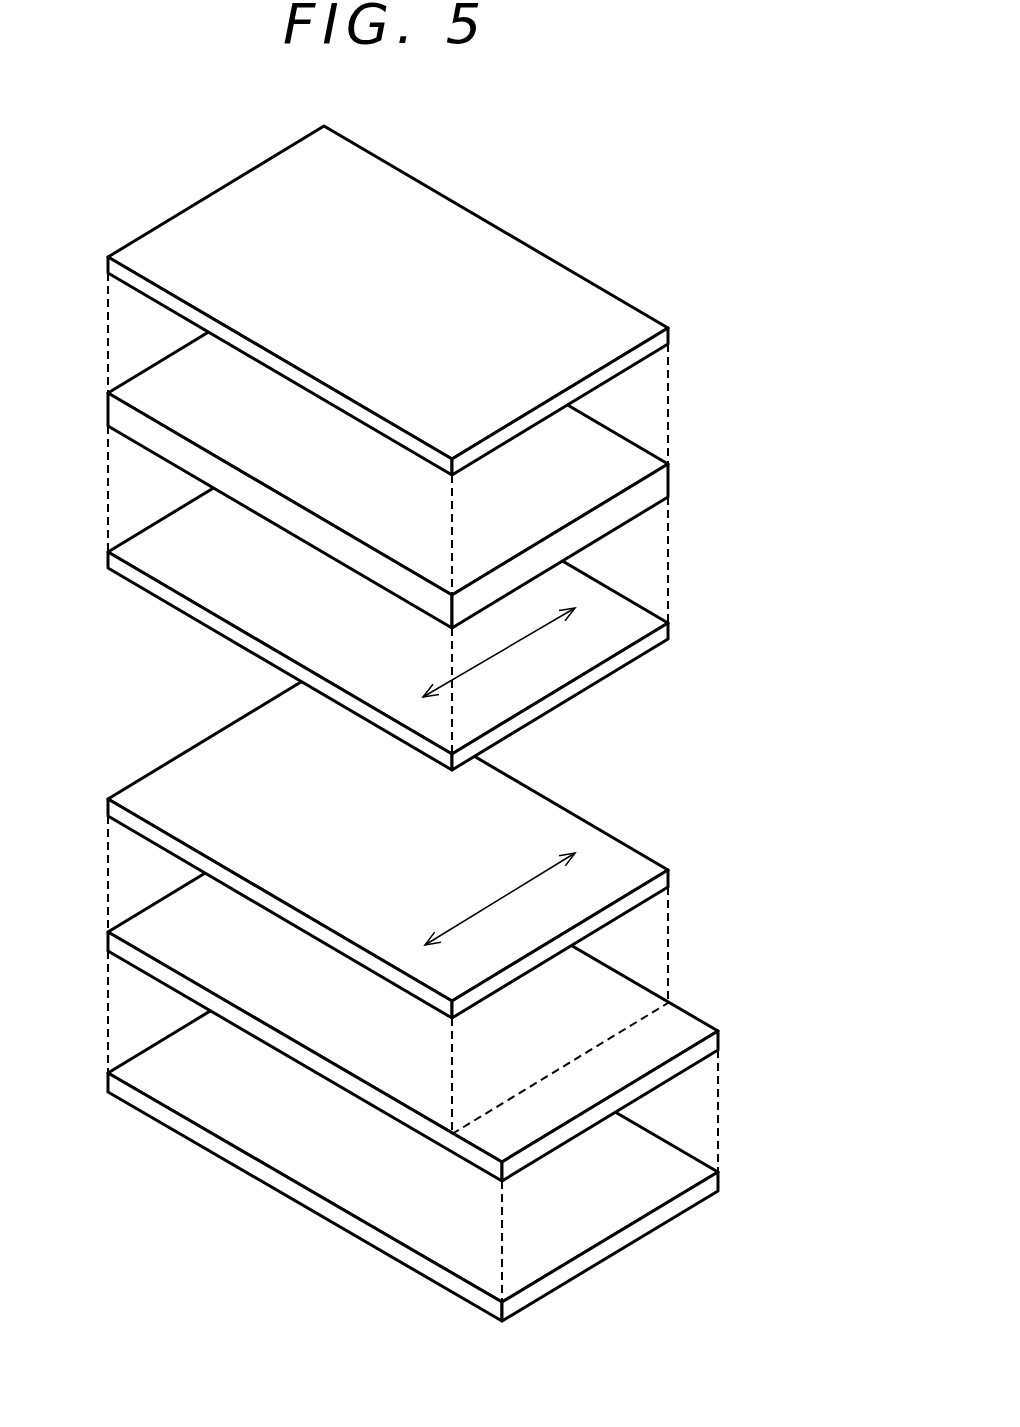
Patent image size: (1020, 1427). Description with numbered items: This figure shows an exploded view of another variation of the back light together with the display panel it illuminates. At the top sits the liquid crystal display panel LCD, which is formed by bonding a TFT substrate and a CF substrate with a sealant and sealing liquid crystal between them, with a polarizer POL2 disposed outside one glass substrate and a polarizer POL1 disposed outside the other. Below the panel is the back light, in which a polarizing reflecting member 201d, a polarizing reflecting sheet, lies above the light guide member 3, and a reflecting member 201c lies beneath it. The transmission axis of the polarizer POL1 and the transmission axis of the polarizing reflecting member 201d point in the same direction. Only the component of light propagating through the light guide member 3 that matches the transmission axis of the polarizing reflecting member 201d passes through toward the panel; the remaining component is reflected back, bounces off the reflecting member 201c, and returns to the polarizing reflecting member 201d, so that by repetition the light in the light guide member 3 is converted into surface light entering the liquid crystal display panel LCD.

The polarizer POL2 is at (475, 275).
The liquid crystal display panel LCD is at (597, 462).
The polarizer POL1 is at (587, 635).
The polarizing reflecting member 201d is at (607, 872).
The light guide member 3 is at (347, 1028).
The reflecting member 201c is at (198, 1095).